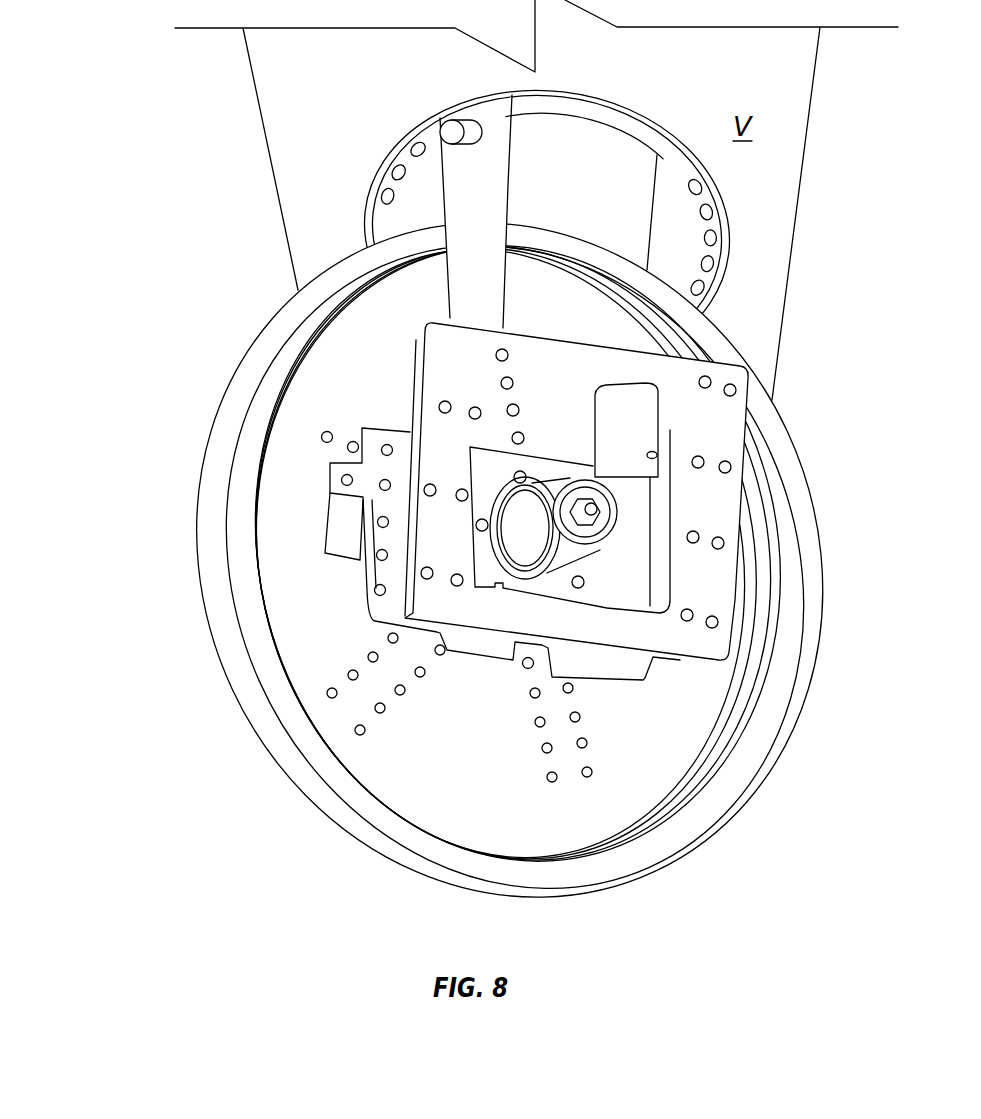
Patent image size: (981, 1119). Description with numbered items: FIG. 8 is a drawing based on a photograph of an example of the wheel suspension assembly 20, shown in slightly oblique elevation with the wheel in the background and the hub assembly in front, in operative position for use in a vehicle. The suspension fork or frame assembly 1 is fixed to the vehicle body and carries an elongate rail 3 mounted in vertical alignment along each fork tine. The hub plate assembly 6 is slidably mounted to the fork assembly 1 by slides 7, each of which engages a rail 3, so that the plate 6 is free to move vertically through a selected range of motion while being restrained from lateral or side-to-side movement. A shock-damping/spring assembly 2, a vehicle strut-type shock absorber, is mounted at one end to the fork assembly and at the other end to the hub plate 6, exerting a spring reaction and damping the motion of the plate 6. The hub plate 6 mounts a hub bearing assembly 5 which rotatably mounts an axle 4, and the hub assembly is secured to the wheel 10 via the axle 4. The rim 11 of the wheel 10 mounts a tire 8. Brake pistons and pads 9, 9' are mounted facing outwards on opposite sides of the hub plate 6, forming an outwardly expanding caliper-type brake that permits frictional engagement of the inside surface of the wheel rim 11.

The wheel suspension assembly 20 is at (140, 131).
The suspension fork or frame assembly 1 is at (527, 219).
The shock-damping/spring assembly 2 is at (624, 418).
The elongate rail 3 is at (444, 449).
The axle 4 is at (614, 510).
The hub bearing assembly 5 is at (541, 578).
The hub plate assembly 6 is at (522, 458).
The slide 7 is at (440, 398).
The tire 8 is at (256, 693).
The brake mechanism 9 is at (264, 567).
The brake piston and pad 9' is at (539, 553).
The wheel 10 is at (543, 758).
The rim 11 is at (336, 723).